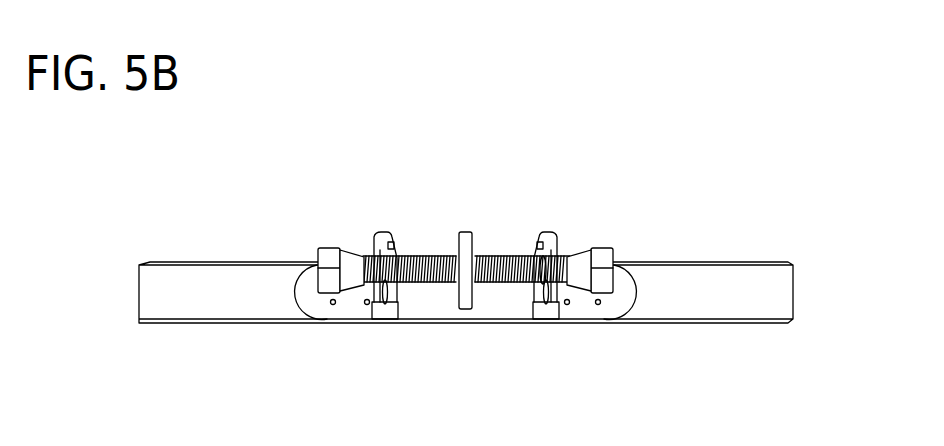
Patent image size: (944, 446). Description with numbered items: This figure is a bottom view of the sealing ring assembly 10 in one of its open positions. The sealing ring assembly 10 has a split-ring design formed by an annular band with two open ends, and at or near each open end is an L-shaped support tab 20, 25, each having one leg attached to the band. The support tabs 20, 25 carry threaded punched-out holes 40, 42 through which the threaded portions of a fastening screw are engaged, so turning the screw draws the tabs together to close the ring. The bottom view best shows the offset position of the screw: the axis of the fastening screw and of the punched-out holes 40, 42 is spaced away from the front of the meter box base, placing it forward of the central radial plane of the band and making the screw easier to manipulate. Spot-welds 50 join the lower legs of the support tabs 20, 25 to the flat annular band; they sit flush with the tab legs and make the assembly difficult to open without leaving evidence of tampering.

The sealing ring assembly 10 is at (702, 230).
The support tab 20 is at (387, 312).
The support tab 25 is at (543, 312).
The threaded punched-out hole 40 is at (396, 286).
The threaded punched-out hole 42 is at (543, 286).
The spot-welds 50 is at (367, 305).